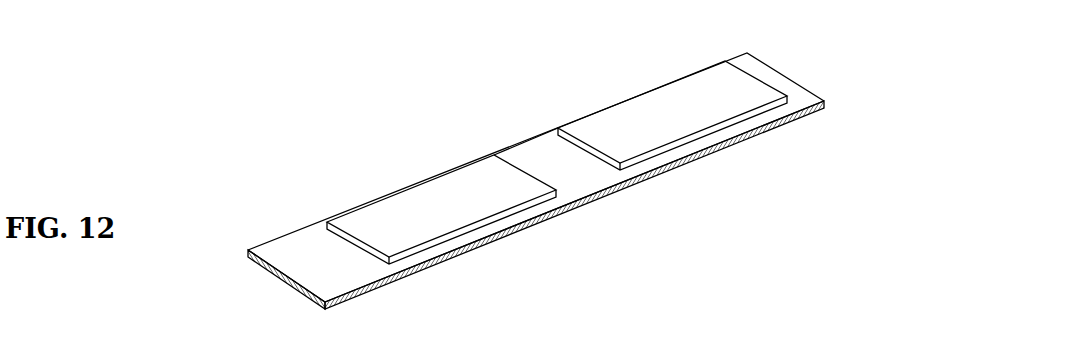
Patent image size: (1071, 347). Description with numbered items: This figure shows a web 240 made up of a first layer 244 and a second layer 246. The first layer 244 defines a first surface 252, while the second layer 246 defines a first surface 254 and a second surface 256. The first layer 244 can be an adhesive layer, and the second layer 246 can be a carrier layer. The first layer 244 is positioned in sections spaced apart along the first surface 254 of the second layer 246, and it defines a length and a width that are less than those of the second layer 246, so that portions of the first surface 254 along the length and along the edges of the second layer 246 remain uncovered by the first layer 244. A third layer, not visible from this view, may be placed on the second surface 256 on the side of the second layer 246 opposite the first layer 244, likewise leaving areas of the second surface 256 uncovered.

The web 240 is at (228, 175).
The first layer 244 is at (346, 218).
The second layer 246 is at (825, 100).
The first surface 252 is at (459, 186).
The first surface 254 is at (527, 158).
The second surface 256 is at (511, 238).